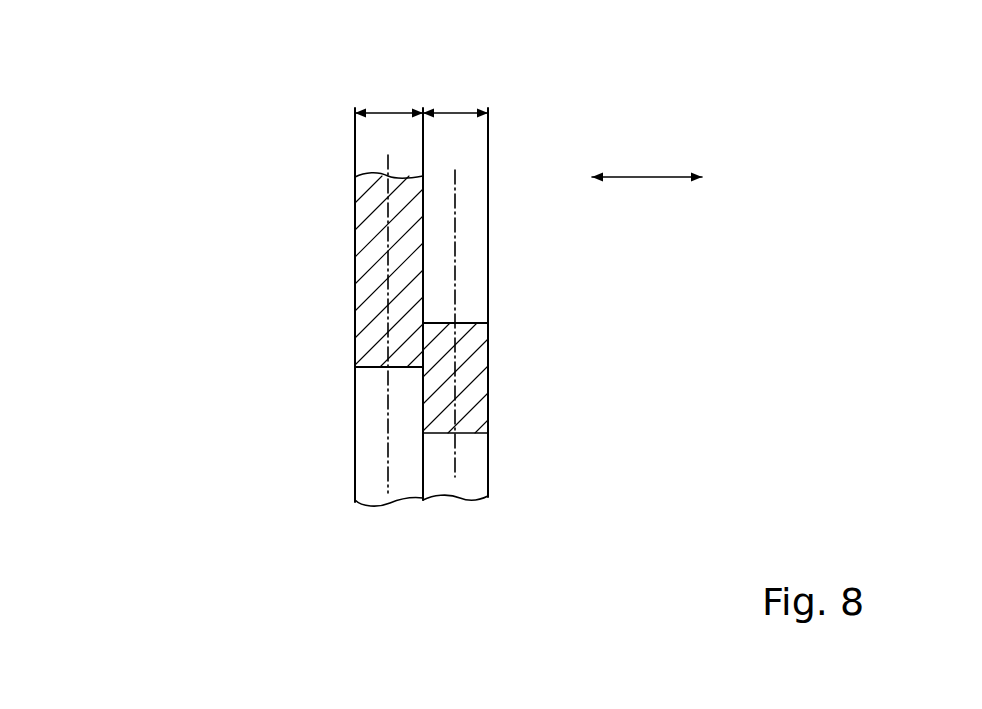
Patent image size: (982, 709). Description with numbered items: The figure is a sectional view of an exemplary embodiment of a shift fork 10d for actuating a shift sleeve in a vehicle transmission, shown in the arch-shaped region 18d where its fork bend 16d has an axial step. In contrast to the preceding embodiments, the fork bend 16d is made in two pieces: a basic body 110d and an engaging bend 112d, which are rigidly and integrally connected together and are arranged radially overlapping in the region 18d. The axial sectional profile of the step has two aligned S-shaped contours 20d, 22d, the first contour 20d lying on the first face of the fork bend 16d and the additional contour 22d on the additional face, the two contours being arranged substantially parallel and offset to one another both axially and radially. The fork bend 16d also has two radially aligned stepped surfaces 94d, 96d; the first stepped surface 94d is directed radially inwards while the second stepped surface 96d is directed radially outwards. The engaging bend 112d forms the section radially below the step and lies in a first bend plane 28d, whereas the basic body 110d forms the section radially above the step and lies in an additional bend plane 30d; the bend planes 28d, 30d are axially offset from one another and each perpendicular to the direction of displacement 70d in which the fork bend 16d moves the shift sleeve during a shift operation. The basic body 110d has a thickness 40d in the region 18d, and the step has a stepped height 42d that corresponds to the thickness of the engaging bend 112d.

The shift fork 10d is at (224, 207).
The fork bend 16d is at (247, 264).
The region 18d is at (327, 322).
The first S-shaped contour 20d is at (506, 275).
The additional S-shaped contour 22d is at (366, 421).
The first bend plane 28d is at (455, 466).
The additional bend plane 30d is at (388, 483).
The thickness 40d is at (388, 113).
The stepped height 42d is at (455, 113).
The direction of displacement 70d is at (645, 177).
The first stepped surface 94d is at (367, 374).
The second stepped surface 96d is at (474, 314).
The basic body 110d is at (356, 212).
The engaging bend 112d is at (473, 362).